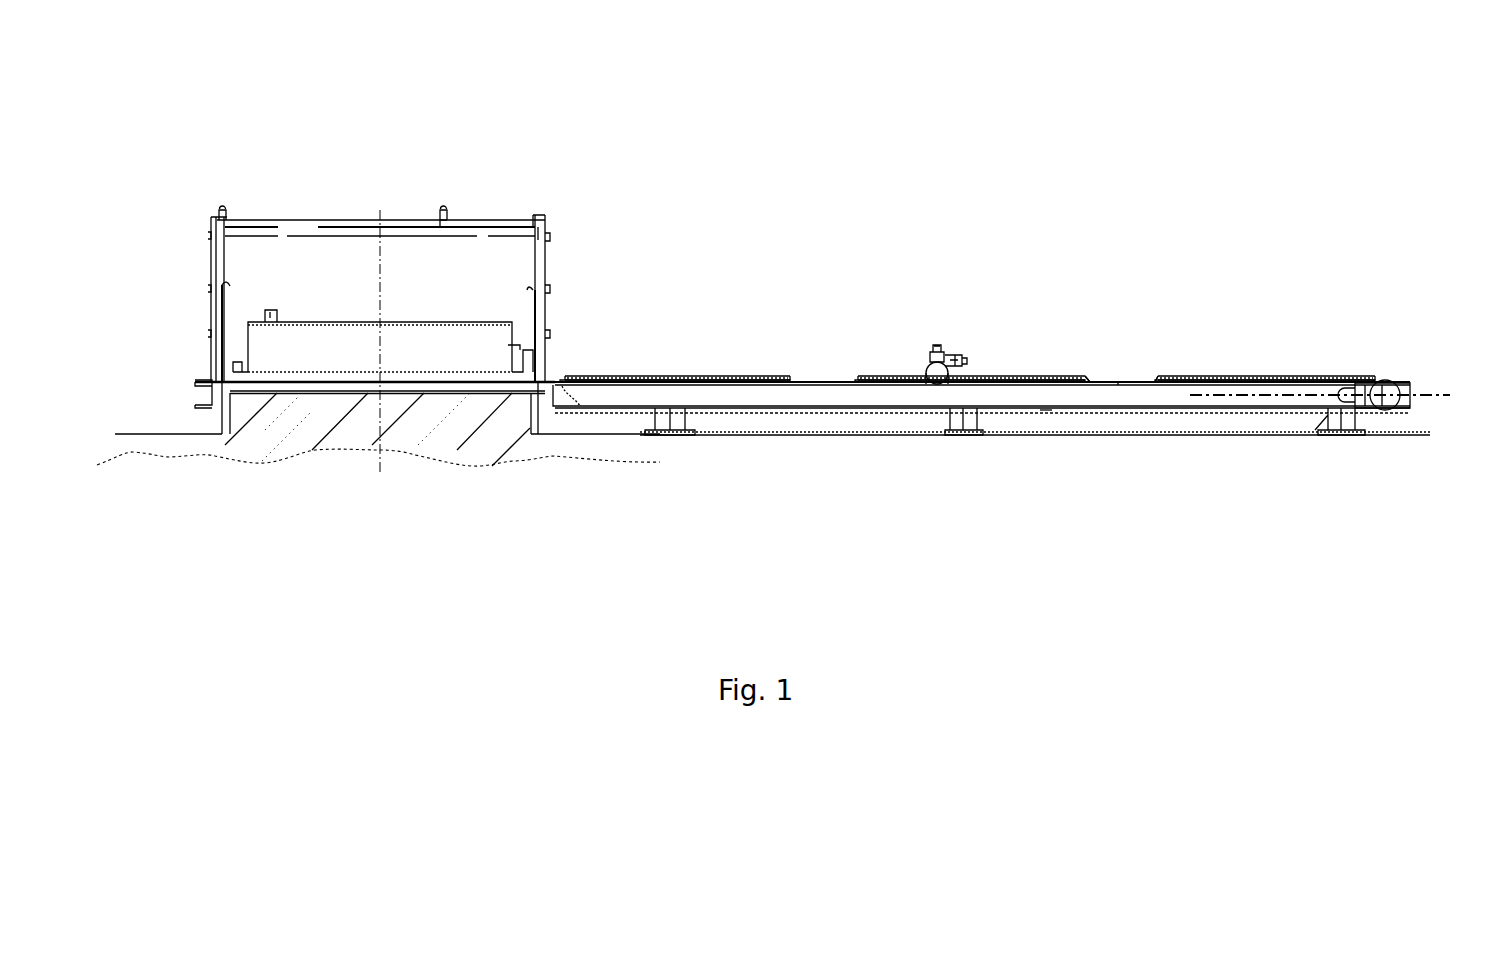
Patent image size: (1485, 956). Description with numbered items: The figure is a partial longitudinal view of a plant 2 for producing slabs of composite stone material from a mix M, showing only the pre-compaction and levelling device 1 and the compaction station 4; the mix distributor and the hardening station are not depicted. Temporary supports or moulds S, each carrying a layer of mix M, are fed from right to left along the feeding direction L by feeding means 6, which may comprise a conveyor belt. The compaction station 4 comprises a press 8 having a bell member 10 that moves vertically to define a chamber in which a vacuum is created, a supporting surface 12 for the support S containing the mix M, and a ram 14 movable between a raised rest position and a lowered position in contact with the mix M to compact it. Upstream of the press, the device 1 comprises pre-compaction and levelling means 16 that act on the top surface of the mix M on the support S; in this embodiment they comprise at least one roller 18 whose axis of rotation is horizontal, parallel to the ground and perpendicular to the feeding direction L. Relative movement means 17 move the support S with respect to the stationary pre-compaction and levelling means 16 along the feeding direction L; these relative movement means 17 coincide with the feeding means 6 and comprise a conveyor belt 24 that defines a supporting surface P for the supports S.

The device 1 is at (913, 278).
The plant 2 is at (742, 146).
The compaction station 4 is at (488, 180).
The feeding means 6 is at (912, 406).
The press 8 is at (560, 282).
The bell member 10 is at (532, 360).
The supporting surface 12 is at (328, 385).
The ram 14 is at (434, 338).
The pre-compaction and levelling means 16 is at (900, 372).
The relative movement means 17 is at (822, 373).
The roller 18 is at (950, 382).
The conveyor belt 24 is at (1042, 395).
The mix M is at (1042, 375).
The temporary support or mould S is at (1088, 380).
The supporting surface P is at (1118, 385).
The feeding direction L is at (1448, 396).